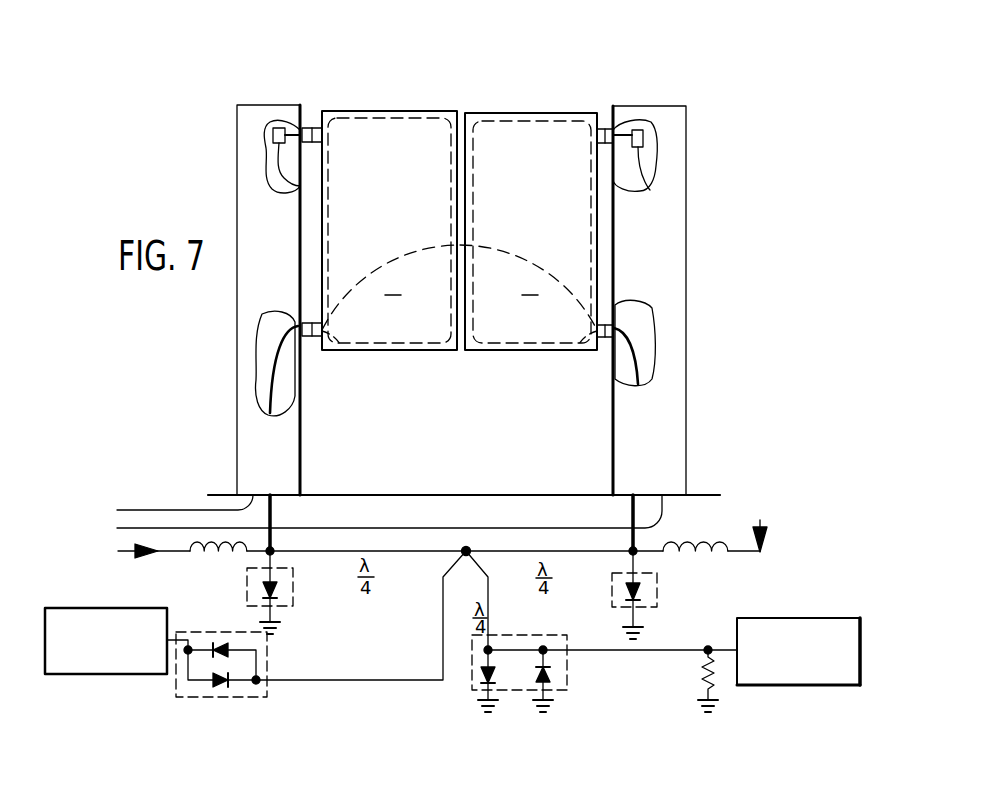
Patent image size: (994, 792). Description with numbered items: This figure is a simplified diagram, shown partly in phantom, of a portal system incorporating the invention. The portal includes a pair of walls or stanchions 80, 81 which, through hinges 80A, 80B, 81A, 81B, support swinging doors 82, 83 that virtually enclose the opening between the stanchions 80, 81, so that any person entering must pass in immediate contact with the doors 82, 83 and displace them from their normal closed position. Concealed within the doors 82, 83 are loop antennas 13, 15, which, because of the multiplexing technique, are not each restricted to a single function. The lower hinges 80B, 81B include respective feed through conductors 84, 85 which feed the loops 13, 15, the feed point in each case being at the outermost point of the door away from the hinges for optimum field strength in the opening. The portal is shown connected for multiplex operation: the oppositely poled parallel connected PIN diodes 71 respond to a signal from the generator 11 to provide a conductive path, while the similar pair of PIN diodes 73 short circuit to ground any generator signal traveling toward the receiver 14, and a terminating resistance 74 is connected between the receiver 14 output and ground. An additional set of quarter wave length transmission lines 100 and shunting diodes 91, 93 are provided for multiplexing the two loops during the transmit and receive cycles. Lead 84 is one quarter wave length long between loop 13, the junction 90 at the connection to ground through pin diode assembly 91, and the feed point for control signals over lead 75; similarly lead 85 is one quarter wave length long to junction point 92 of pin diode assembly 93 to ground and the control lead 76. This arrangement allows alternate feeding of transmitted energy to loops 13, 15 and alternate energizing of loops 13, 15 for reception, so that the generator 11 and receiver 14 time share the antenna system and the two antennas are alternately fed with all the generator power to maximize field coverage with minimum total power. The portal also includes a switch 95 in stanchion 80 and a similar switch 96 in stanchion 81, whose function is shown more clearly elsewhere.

The stanchion 80 is at (236, 173).
The stanchion 81 is at (686, 175).
The swinging door 82 is at (355, 130).
The swinging door 83 is at (531, 202).
The loop antenna 13 is at (328, 210).
The loop antenna 15 is at (475, 212).
The hinge 80A is at (313, 127).
The hinge 80B is at (307, 337).
The hinge 81A is at (607, 128).
The hinge 81B is at (598, 342).
The portal switch 95 is at (280, 126).
The portal switch 96 is at (642, 130).
The feed through conductor 84 is at (343, 313).
The feed through conductor 85 is at (552, 320).
The junction 90 is at (274, 549).
The junction point 92 is at (633, 551).
The quarter wave length transmission lines 100 is at (466, 551).
The pin diode assembly 91 is at (247, 594).
The pin diode assembly 93 is at (657, 590).
The PIN diodes 71 is at (267, 660).
The PIN diodes 73 is at (507, 635).
The terminating resistance 74 is at (703, 665).
The control lead 75 is at (120, 553).
The control lead 76 is at (731, 557).
The generator 11 is at (72, 608).
The receiver 14 is at (800, 618).